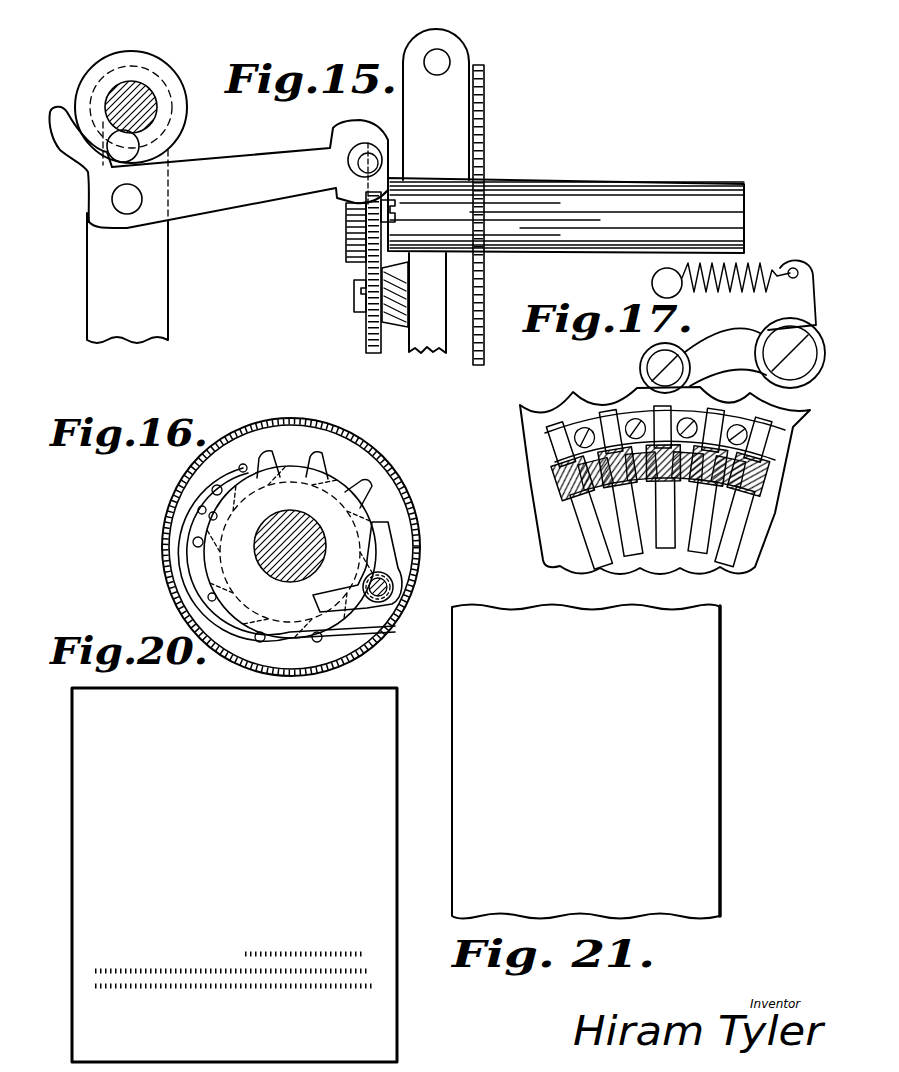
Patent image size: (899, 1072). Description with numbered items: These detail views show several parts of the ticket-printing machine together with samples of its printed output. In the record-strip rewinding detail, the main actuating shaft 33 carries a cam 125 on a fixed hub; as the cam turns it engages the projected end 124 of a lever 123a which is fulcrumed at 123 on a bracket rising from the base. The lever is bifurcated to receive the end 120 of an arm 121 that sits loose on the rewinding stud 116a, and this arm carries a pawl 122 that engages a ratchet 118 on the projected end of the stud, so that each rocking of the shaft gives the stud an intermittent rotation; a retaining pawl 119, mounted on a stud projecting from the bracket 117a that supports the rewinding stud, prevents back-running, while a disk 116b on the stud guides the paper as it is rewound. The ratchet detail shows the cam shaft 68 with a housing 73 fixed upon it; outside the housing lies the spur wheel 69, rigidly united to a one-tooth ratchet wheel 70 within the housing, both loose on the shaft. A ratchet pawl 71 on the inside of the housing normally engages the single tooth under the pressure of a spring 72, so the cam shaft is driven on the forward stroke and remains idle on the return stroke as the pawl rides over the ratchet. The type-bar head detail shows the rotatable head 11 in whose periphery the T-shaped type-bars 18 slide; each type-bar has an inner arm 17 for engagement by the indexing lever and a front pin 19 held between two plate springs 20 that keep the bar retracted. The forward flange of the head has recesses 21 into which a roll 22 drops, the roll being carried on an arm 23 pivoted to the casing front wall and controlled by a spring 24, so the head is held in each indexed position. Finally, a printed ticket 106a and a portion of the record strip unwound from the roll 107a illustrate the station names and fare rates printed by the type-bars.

In FIG. 15, the main actuating shaft 33 is at (136, 103).
In FIG. 15, the cam 125 is at (131, 147).
In FIG. 15, the projected end of lever 124 is at (66, 150).
In FIG. 15, the lever arm 123a is at (222, 204).
In FIG. 15, the lever fulcrum 123 is at (126, 205).
In FIG. 15, the end of arm 120 is at (380, 160).
In FIG. 15, the pawl 122 is at (366, 210).
In FIG. 15, the arm 121 is at (346, 252).
In FIG. 15, the ratchet wheel 118 is at (365, 268).
In FIG. 15, the retaining pawl 119 is at (366, 333).
In FIG. 15, the rewinding stud 116a is at (668, 195).
In FIG. 15, the disk 116b is at (487, 118).
In FIG. 15, the bracket 117a is at (436, 209).
In FIG. 17, the spring 24 is at (753, 258).
In FIG. 17, the arm 23 is at (755, 353).
In FIG. 17, the roll 22 is at (640, 367).
In FIG. 17, the recesses 21 is at (546, 409).
In FIG. 17, the pin 19 is at (523, 420).
In FIG. 17, the plate springs 20 is at (547, 452).
In FIG. 17, the rotatable head 11 is at (540, 488).
In FIG. 17, the arm 17 is at (585, 523).
In FIG. 17, the type-bar 18 is at (747, 518).
In FIG. 16, the housing 73 is at (168, 596).
In FIG. 16, the spur wheel 69 is at (320, 468).
In FIG. 16, the one-tooth ratchet wheel 70 is at (332, 520).
In FIG. 16, the cam shaft 68 is at (288, 535).
In FIG. 16, the spring 72 is at (293, 636).
In FIG. 16, the ratchet pawl 71 is at (376, 612).
In FIG. 20, the ticket 106a is at (399, 1009).
In FIG. 21, the roll 107a is at (713, 786).